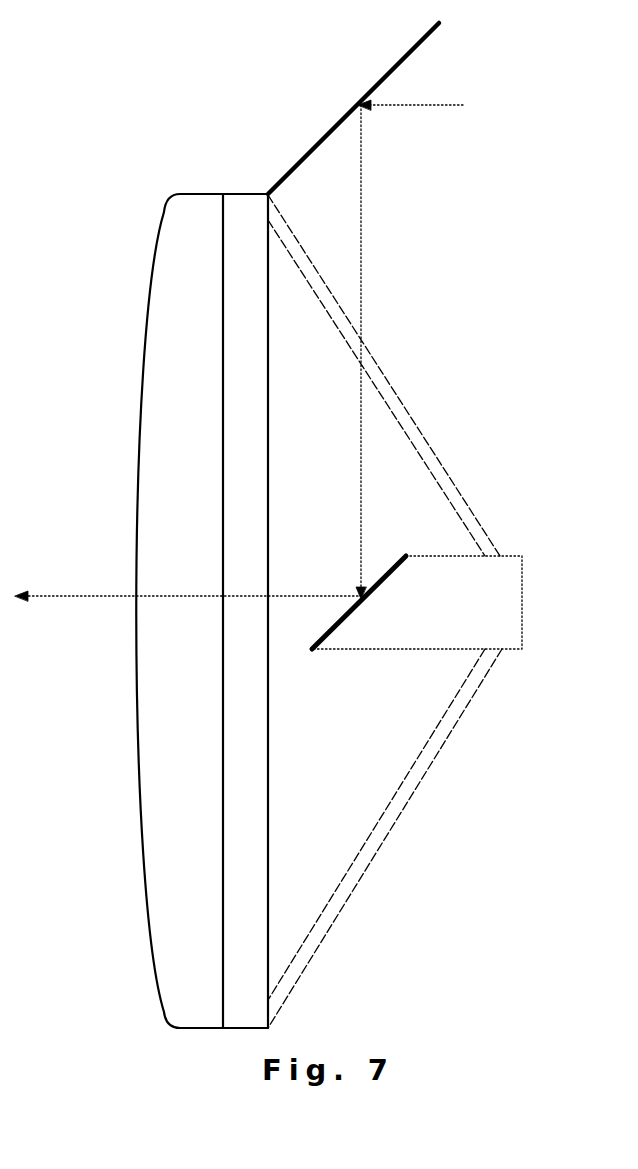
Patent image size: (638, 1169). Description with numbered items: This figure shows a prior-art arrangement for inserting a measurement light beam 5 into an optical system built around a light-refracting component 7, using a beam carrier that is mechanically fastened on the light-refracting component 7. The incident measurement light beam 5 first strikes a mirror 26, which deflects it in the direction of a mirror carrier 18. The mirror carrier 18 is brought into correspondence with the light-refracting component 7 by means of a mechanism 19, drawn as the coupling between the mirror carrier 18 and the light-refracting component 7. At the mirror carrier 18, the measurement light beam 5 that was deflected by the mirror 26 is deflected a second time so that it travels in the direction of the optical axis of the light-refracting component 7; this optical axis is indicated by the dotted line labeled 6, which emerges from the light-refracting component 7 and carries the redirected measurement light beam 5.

The measurement light beam 5 is at (447, 102).
The optical axis of lens 6 is at (83, 592).
The light-refracting component 7 is at (248, 818).
The mirror carrier 18 is at (495, 600).
The mechanism 19 is at (413, 433).
The mirror 26 is at (412, 55).